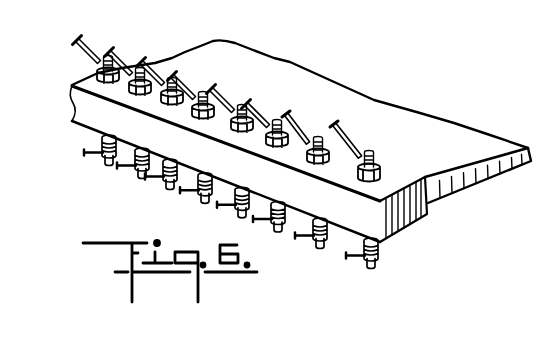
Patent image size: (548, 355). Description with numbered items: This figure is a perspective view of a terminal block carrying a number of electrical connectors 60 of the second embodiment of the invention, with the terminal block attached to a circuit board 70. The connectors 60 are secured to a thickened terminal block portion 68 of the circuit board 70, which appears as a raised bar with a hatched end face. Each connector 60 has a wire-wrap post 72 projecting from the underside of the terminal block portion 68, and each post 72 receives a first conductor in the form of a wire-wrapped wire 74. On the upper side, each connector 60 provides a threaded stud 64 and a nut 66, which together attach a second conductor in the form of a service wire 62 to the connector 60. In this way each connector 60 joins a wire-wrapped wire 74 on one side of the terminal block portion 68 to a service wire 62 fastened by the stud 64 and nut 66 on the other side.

The electrical connector 60 is at (395, 172).
The service wire 62 is at (341, 122).
The threaded stud 64 is at (381, 162).
The nut 66 is at (372, 150).
The terminal block portion 68 is at (398, 222).
The circuit board 70 is at (270, 68).
The wire-wrap post 72 is at (322, 248).
The wire-wrapped wire 74 is at (303, 242).